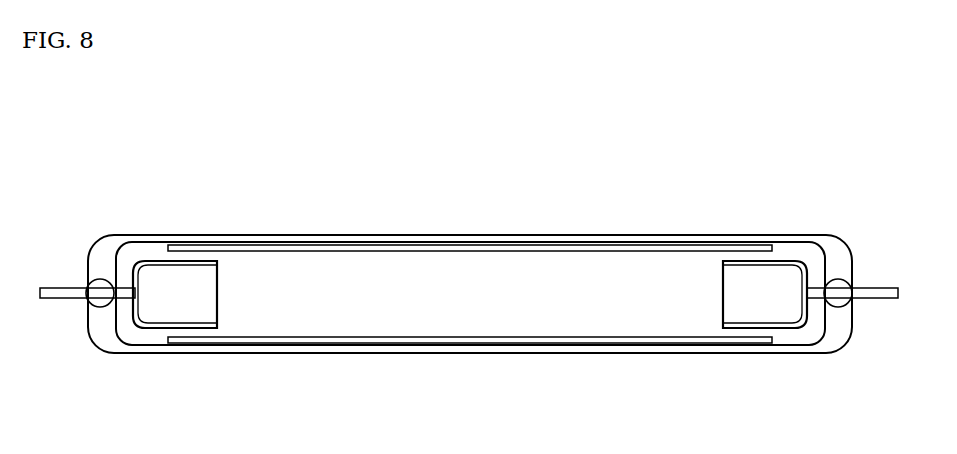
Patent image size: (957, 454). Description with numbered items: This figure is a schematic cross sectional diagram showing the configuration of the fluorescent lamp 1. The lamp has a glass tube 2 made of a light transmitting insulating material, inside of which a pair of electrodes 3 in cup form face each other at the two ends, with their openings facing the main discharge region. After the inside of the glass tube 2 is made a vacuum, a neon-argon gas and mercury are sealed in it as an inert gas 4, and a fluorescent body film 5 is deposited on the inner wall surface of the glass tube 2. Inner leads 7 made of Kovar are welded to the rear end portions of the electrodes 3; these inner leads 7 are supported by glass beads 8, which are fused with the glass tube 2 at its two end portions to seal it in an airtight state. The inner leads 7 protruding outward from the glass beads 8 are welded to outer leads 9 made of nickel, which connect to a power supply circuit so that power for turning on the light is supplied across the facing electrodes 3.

The fluorescent lamp 1 is at (500, 172).
The glass tube 2 is at (278, 235).
The electrodes in cup form 3 is at (138, 262).
The inert gas 4 is at (441, 262).
The fluorescent body film 5 is at (351, 250).
The inner leads 7 is at (813, 296).
The glass beads 8 is at (837, 279).
The outer leads 9 is at (879, 288).